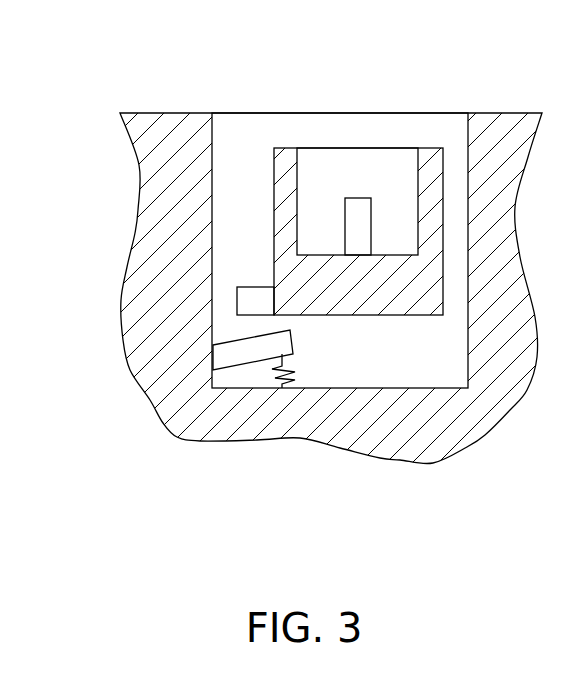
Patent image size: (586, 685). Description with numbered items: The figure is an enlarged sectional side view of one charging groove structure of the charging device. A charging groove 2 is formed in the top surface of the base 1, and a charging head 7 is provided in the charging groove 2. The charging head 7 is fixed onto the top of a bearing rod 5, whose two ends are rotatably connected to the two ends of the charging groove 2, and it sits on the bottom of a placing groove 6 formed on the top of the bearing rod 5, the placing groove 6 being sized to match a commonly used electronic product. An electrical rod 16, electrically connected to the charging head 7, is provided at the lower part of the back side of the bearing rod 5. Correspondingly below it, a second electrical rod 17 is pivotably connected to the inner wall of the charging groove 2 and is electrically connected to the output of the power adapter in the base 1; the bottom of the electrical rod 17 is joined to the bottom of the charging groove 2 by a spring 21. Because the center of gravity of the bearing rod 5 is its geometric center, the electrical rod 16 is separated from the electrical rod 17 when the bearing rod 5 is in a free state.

The base 1 is at (168, 368).
The charging groove 2 is at (374, 365).
The bearing rod 5 is at (287, 217).
The placing groove A 6 is at (334, 190).
The charging head A 7 is at (360, 227).
The electrical rod A 16 is at (247, 290).
The electrical rod B 17 is at (252, 352).
The spring 21 is at (281, 388).